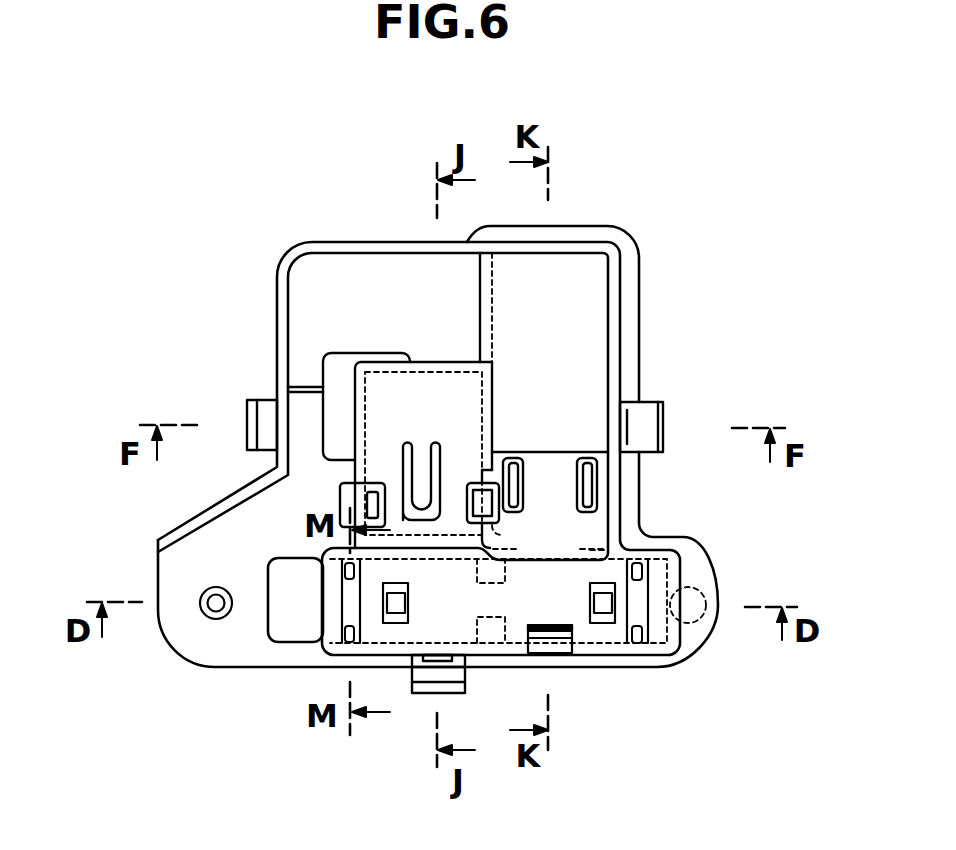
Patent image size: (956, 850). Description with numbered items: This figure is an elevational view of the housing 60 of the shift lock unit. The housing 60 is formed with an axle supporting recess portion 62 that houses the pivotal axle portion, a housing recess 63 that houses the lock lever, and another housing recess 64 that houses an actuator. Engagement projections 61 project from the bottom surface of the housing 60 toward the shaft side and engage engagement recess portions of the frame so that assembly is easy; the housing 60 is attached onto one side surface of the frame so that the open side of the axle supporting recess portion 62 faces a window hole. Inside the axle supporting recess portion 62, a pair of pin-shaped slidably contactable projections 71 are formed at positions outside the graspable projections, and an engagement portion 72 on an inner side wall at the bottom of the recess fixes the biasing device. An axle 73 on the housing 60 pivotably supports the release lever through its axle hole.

The housing 60 is at (340, 242).
The engagement projection 61 is at (248, 405).
The axle supporting recess portion 62 is at (462, 620).
The housing recess 63 is at (566, 312).
The housing recess 64 is at (385, 395).
The slidably contactable projection 71 is at (342, 573).
The engagement portion 72 is at (548, 638).
The axle 73 is at (216, 618).